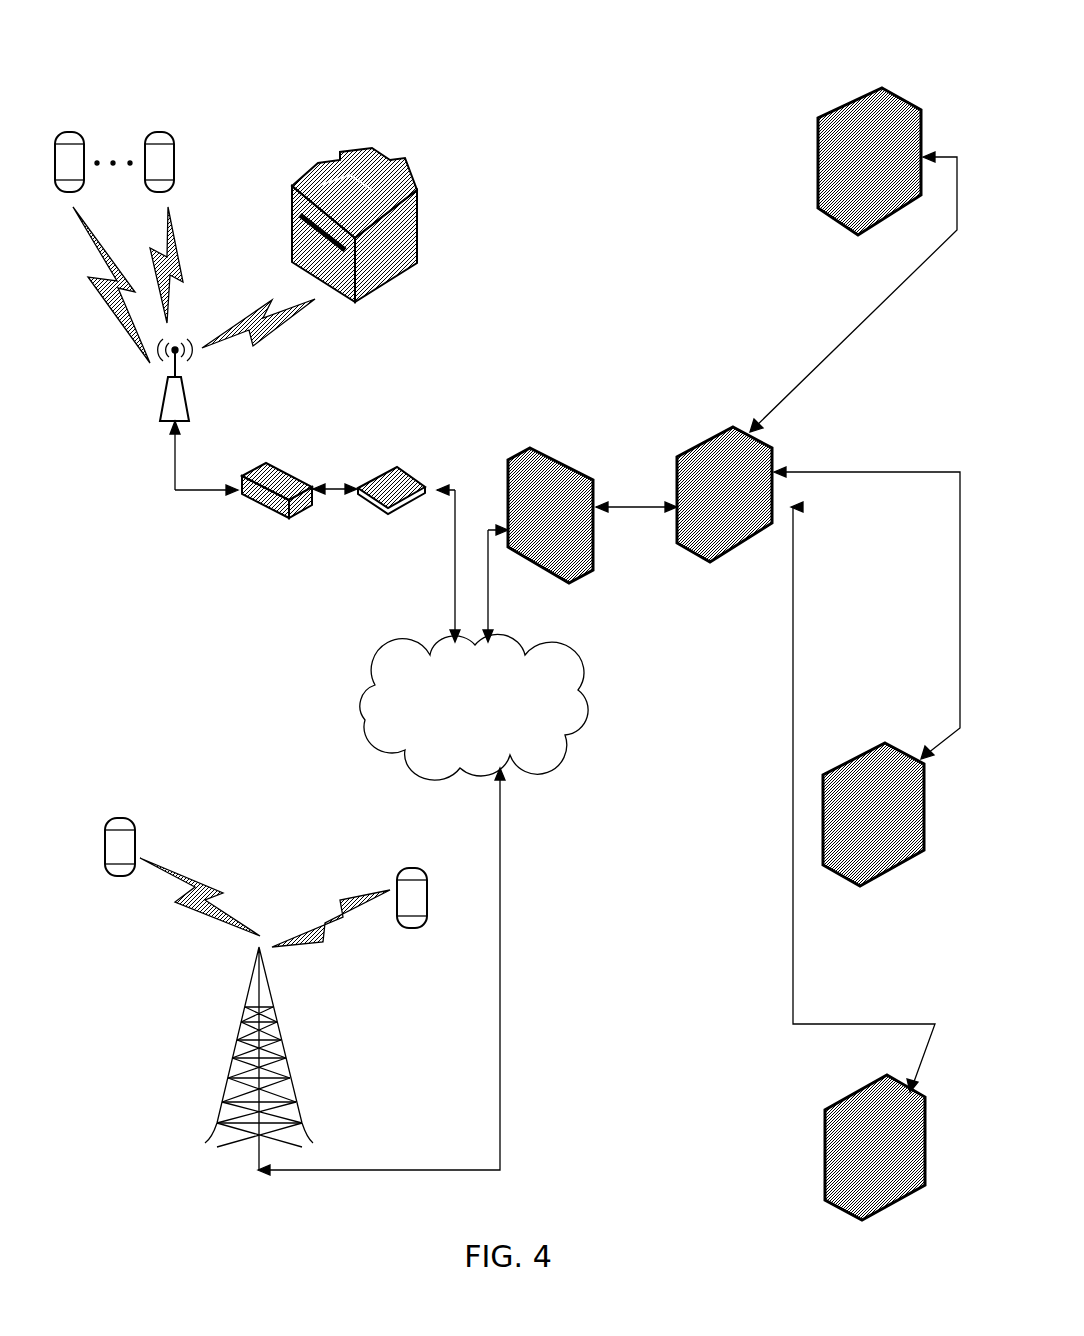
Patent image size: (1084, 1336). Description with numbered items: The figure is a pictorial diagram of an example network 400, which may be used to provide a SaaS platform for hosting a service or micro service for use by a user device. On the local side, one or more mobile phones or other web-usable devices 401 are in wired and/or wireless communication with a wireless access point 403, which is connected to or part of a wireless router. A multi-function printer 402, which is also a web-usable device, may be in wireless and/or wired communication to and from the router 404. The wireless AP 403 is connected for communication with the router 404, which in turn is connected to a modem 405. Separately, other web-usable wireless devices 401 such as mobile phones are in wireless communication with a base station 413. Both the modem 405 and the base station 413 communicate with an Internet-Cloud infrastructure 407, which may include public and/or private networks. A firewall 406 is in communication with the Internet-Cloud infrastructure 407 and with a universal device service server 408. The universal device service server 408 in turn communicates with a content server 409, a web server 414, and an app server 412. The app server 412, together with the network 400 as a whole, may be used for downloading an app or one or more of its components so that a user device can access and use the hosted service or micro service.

The network 400 is at (188, 48).
The web-usable devices 401 is at (410, 868).
The multi-function printer 402 is at (420, 207).
The wireless access point 403 is at (187, 383).
The router 404 is at (260, 508).
The modem 405 is at (386, 512).
The firewall 406 is at (552, 442).
The Internet-Cloud infrastructure 407 is at (423, 904).
The universal device service server 408 is at (730, 425).
The content server 409 is at (818, 128).
The app server 412 is at (825, 1105).
The base station 413 is at (280, 1072).
The web server 414 is at (880, 742).